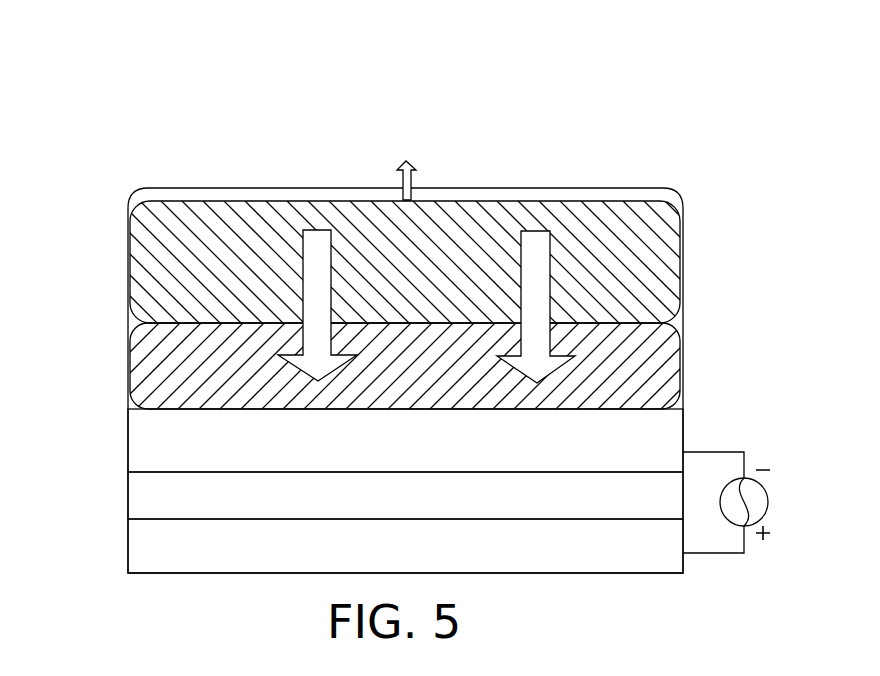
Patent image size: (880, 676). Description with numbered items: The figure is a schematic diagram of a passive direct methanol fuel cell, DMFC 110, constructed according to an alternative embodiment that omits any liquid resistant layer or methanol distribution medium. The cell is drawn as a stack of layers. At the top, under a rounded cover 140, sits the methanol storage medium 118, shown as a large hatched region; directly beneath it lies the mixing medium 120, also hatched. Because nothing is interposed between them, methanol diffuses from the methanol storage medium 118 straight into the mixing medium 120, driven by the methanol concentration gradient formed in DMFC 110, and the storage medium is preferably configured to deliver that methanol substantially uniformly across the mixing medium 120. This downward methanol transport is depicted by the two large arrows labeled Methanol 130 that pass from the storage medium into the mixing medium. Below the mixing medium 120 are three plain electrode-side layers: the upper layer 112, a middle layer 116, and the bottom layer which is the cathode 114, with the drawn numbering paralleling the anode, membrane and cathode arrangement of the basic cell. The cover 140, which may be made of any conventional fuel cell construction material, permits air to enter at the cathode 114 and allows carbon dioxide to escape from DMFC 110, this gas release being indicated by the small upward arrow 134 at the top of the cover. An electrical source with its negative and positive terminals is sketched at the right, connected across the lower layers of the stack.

The DMFC 110 is at (161, 110).
The anode 112 is at (147, 437).
The cathode 114 is at (147, 545).
The electrolyte membrane 116 is at (147, 497).
The methanol storage medium 118 is at (145, 272).
The mixing medium 120 is at (147, 365).
The methanol fuel flow 130 is at (528, 245).
The arrow 134 is at (400, 177).
The cover 140 is at (632, 188).